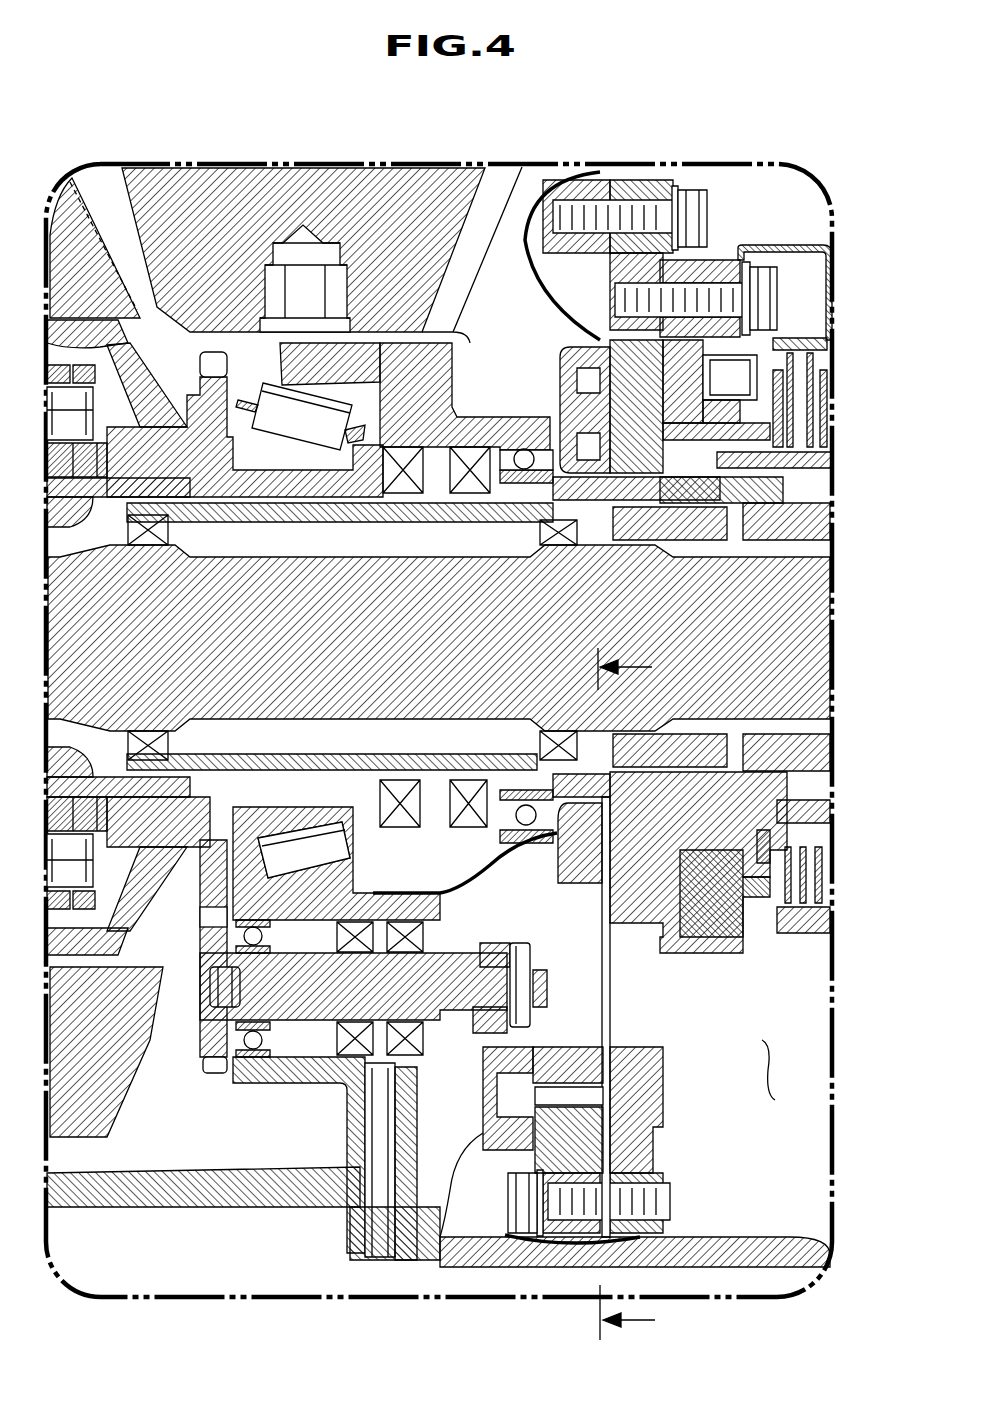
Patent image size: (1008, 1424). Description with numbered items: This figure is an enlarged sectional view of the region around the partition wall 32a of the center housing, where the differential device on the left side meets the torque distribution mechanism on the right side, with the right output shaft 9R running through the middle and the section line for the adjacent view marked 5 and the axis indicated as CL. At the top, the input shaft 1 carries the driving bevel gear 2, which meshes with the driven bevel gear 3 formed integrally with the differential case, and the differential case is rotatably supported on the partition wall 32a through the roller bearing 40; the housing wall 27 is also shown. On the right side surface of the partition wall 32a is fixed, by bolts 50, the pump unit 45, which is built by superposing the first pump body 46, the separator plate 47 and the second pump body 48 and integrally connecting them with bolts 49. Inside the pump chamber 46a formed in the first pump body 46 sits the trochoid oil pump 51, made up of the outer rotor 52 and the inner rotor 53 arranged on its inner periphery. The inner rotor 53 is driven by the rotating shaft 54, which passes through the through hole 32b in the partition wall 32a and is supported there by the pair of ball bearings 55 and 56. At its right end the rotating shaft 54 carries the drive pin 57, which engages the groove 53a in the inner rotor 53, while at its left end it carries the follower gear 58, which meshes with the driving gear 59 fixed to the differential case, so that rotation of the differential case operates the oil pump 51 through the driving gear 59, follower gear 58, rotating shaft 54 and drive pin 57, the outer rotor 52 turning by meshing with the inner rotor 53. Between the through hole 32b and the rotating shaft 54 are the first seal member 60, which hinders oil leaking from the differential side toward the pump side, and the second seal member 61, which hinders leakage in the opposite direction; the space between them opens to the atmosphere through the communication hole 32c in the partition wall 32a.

The input shaft 1 is at (362, 195).
The driving bevel gear 2 is at (505, 185).
The driven bevel gear 3 is at (108, 195).
The right output shaft 9R is at (439, 638).
The casing wall 27 is at (163, 862).
The partition wall 32a is at (455, 408).
The through hole 32b is at (278, 1085).
The communication hole 32c is at (348, 1208).
The roller bearing 40 is at (275, 392).
The pump unit 45 is at (600, 797).
The first pump body 46 is at (520, 1152).
The pump chamber 46a is at (558, 1237).
The separator plate 47 is at (655, 1147).
The second pump body 48 is at (640, 1178).
The bolts 49 is at (770, 300).
The bolts 50 is at (702, 218).
The trochoid oil pump 51 is at (788, 1070).
The outer rotor 52 is at (603, 1105).
The inner rotor 53 is at (600, 1052).
The groove 53a is at (573, 1033).
The rotating shaft 54 is at (318, 1058).
The ball bearing 55 is at (248, 1060).
The ball bearing 56 is at (440, 905).
The drive pin 57 is at (530, 958).
The follower gear 58 is at (210, 1065).
The driving gear 59 is at (200, 918).
The first seal member 60 is at (338, 938).
The second seal member 61 is at (405, 1078).
The sun gear 5 is at (640, 990).
The center line CL is at (806, 329).